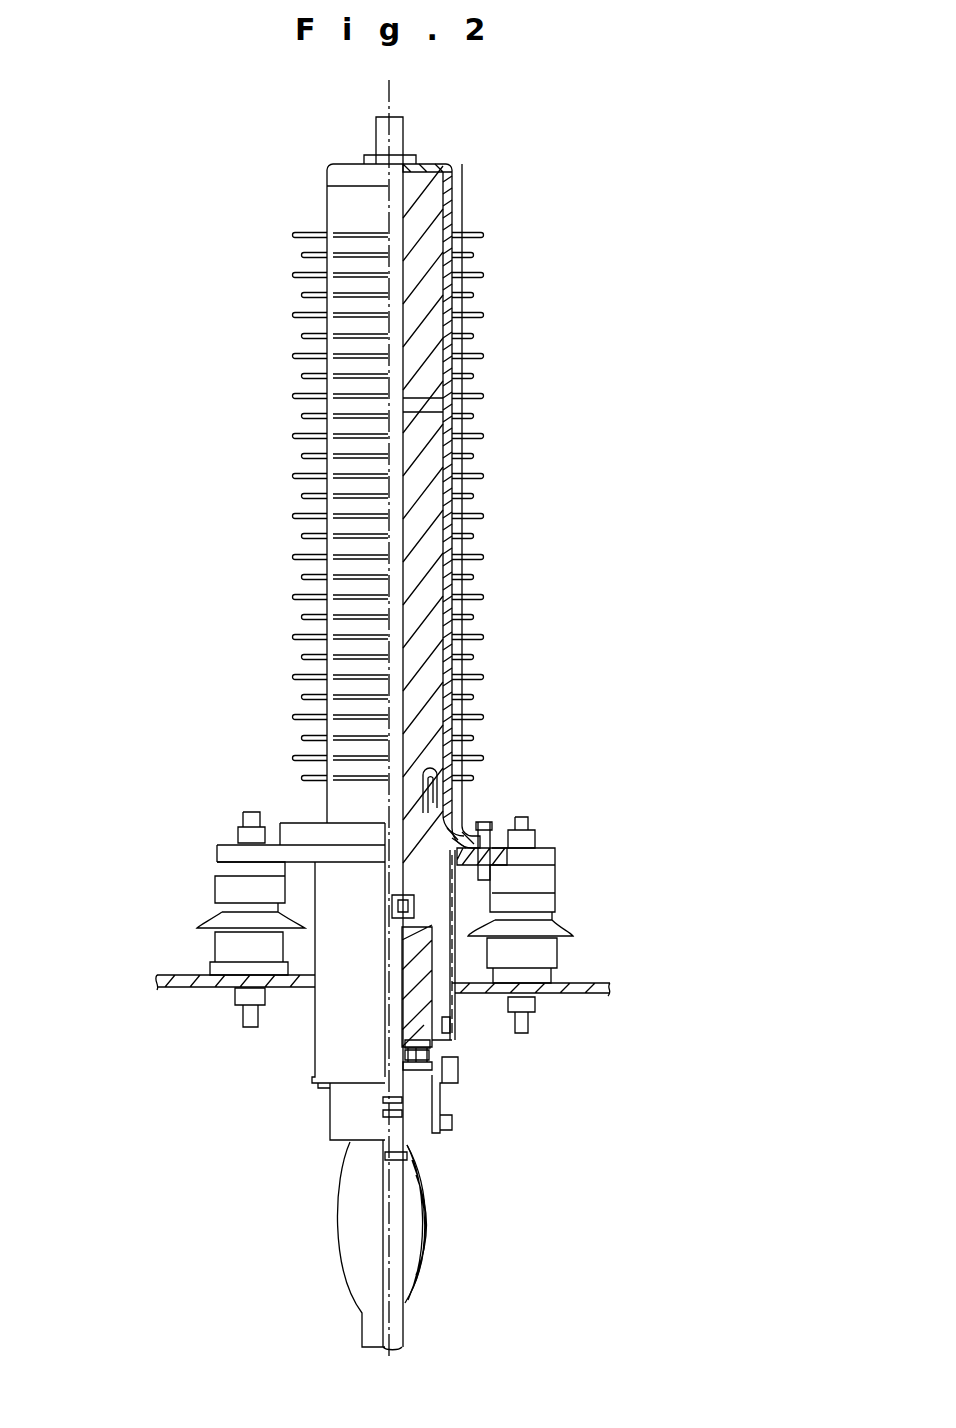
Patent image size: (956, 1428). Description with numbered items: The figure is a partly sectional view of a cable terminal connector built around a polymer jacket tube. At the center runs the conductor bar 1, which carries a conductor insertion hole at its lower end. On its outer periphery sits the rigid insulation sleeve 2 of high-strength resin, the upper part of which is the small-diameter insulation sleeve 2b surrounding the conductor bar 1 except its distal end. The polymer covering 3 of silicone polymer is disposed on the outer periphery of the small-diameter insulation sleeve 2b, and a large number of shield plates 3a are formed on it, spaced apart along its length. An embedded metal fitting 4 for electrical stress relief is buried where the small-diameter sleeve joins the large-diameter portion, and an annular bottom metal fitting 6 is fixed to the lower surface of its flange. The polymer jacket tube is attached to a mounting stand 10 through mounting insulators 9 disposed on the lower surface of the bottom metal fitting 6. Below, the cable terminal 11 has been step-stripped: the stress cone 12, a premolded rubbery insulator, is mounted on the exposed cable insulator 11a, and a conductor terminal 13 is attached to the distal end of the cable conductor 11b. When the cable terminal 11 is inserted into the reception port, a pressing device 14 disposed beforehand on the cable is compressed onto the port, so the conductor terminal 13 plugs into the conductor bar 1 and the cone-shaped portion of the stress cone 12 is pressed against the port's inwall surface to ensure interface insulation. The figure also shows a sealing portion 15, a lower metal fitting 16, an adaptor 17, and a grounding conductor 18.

The conductor bar 1 is at (397, 235).
The rigid insulation sleeve 2 is at (420, 325).
The small-diameter insulation sleeve 2b is at (428, 412).
The polymer covering 3 is at (453, 506).
The shield plates (shades) 3a is at (460, 725).
The embedded metal fitting 4 is at (433, 805).
The bottom metal fitting 6 is at (317, 855).
The mounting insulators 9 is at (228, 887).
The mounting stand 10 is at (165, 992).
The cable terminal 11 is at (316, 1051).
The cable insulator 11a is at (392, 1000).
The cable conductor 11b is at (387, 910).
The stress cone 12 is at (440, 965).
The conductor terminal 13 is at (490, 895).
The pressing device 14 is at (453, 1020).
The sealing portion 15 is at (430, 1230).
The lower metal fitting 16 is at (417, 1130).
The adaptor 17 is at (455, 1062).
The grounding conductor 18 is at (427, 1140).